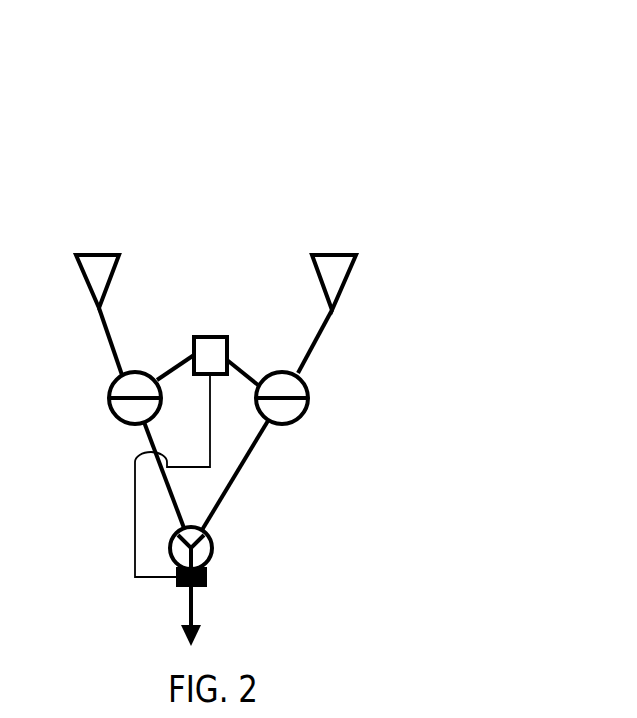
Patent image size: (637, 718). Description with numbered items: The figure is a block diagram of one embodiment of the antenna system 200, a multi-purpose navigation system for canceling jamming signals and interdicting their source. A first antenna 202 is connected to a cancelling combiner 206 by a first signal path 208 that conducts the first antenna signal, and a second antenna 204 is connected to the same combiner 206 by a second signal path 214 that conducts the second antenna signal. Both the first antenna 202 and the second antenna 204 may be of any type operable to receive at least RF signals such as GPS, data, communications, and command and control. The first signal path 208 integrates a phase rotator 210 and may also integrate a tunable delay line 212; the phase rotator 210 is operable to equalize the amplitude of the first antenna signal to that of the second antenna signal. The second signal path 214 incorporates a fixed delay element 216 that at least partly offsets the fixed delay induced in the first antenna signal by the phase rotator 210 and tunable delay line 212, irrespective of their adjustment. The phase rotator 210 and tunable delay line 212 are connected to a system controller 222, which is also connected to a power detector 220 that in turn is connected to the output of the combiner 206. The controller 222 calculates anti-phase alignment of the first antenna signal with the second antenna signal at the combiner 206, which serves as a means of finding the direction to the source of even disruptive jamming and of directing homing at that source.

The antenna system 200 is at (213, 153).
The first antenna 202 is at (97, 273).
The second antenna 204 is at (335, 277).
The cancelling combiner 206 is at (217, 552).
The first signal path 208 is at (100, 332).
The phase rotator 210 is at (110, 383).
The tunable delay line 212 is at (112, 413).
The second signal path 214 is at (327, 332).
The fixed delay element 216 is at (302, 388).
The power detector 220 is at (207, 582).
The system controller 222 is at (203, 357).